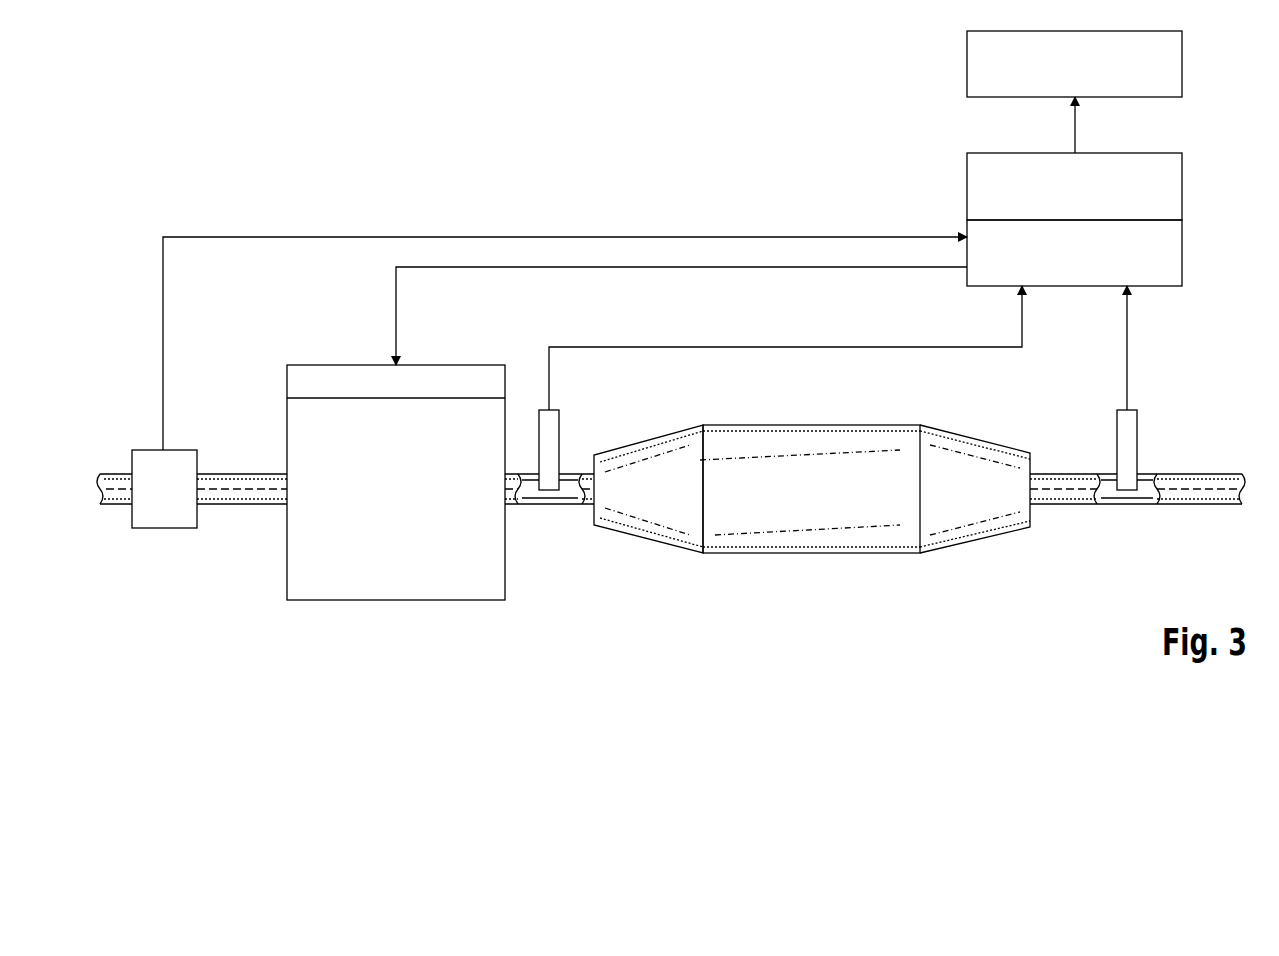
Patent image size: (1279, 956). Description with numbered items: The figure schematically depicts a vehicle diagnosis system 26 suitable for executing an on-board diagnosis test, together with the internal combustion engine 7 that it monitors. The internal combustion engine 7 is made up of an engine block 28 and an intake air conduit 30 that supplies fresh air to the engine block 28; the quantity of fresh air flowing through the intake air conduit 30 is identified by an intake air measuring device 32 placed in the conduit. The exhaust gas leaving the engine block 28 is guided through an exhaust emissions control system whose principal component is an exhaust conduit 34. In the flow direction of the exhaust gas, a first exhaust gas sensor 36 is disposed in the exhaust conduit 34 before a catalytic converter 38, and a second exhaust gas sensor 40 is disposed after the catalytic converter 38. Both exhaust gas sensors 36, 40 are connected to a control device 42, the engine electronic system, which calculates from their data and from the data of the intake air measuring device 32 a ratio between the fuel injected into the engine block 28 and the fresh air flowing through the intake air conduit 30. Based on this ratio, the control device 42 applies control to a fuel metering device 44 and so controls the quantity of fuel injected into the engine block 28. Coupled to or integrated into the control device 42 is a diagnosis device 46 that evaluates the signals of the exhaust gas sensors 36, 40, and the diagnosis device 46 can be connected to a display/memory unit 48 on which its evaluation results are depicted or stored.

The internal combustion engine 7 is at (1196, 432).
The vehicle diagnosis system 26 is at (1190, 121).
The engine block 28 is at (396, 600).
The intake air conduit 30 is at (118, 498).
The intake air measuring device 32 is at (163, 530).
The exhaust conduit 34 is at (582, 480).
The first exhaust gas sensor 36 is at (551, 493).
The catalytic converter 38 is at (810, 553).
The second exhaust gas sensor 40 is at (1127, 493).
The control device 42 is at (1182, 252).
The fuel metering device 44 is at (314, 378).
The diagnosis device 46 is at (1182, 186).
The display/memory unit 48 is at (1182, 62).